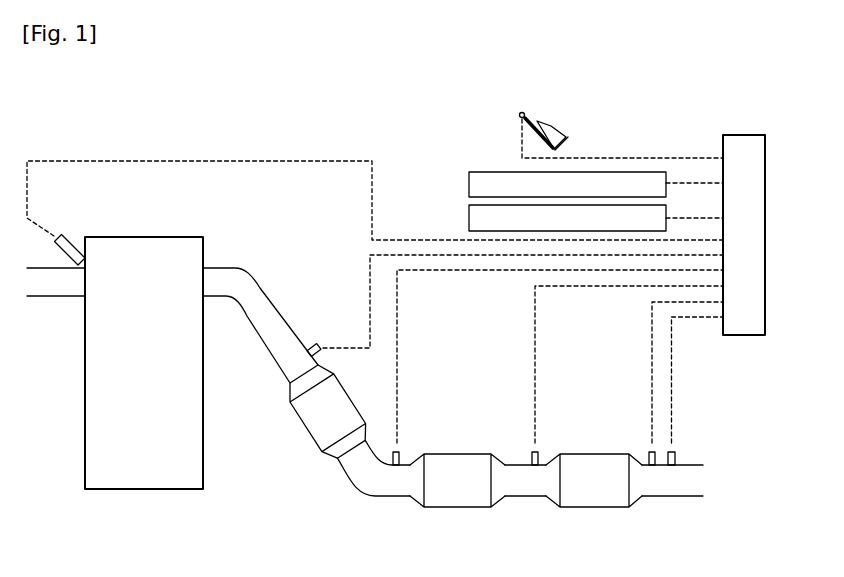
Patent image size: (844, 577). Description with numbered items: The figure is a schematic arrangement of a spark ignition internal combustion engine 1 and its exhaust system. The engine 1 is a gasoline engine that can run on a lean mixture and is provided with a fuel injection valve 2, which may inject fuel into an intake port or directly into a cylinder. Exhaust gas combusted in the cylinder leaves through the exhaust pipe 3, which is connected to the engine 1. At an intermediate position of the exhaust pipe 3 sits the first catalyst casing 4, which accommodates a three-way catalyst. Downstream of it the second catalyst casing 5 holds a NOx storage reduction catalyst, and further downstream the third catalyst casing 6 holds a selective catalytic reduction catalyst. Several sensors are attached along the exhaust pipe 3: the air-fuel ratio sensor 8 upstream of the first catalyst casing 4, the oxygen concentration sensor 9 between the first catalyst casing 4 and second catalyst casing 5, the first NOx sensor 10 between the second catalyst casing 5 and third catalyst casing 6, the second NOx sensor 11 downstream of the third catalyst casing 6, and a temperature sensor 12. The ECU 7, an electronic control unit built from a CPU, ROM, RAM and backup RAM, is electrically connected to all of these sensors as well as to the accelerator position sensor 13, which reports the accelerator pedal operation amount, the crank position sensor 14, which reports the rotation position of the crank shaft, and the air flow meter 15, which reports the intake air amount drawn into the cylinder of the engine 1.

The internal combustion engine 1 is at (85, 428).
The fuel injection valve 2 is at (74, 235).
The exhaust pipe 3 is at (248, 272).
The first catalyst casing 4 is at (307, 426).
The second catalyst casing 5 is at (455, 508).
The third catalyst casing 6 is at (601, 507).
The ECU 7 is at (766, 190).
The air-fuel ratio sensor 8 is at (324, 356).
The oxygen concentration sensor 9 is at (400, 457).
The first NOx sensor 10 is at (540, 457).
The second NOx sensor 11 is at (647, 453).
The temperature sensor 12 is at (680, 453).
The accelerator position sensor 13 is at (519, 114).
The crank position sensor 14 is at (469, 189).
The air flow meter 15 is at (469, 224).